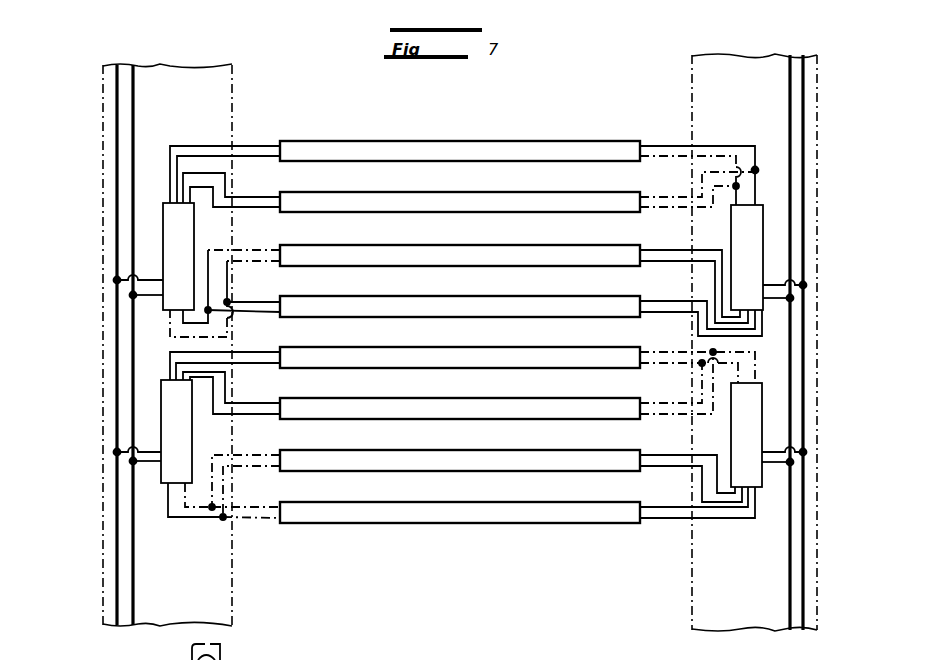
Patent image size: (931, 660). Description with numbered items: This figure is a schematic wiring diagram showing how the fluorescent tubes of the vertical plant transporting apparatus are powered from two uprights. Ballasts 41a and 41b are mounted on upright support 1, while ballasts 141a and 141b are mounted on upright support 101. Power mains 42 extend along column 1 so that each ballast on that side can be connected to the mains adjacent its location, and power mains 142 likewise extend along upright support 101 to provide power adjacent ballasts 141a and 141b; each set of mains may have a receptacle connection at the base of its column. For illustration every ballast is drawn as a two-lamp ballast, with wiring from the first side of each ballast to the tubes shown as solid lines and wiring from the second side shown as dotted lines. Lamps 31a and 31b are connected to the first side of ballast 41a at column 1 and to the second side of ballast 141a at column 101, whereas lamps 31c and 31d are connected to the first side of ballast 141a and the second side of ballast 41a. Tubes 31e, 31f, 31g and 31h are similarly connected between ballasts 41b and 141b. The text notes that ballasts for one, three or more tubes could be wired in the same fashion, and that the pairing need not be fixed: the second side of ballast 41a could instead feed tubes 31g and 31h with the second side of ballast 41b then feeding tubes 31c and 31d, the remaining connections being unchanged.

The upright support 1 is at (103, 122).
The upright support 101 is at (817, 135).
The power mains 42 is at (116, 218).
The power mains 142 is at (806, 290).
The lamp 31a is at (484, 141).
The lamp 31b is at (484, 192).
The lamp 31c is at (484, 245).
The lamp 31d is at (484, 296).
The tube 31e is at (484, 347).
The tube 31f is at (484, 398).
The tube 31g is at (484, 450).
The tube 31h is at (484, 502).
The ballast 41a is at (196, 240).
The ballast 41b is at (194, 448).
The ballast 141a is at (731, 246).
The ballast 141b is at (731, 452).